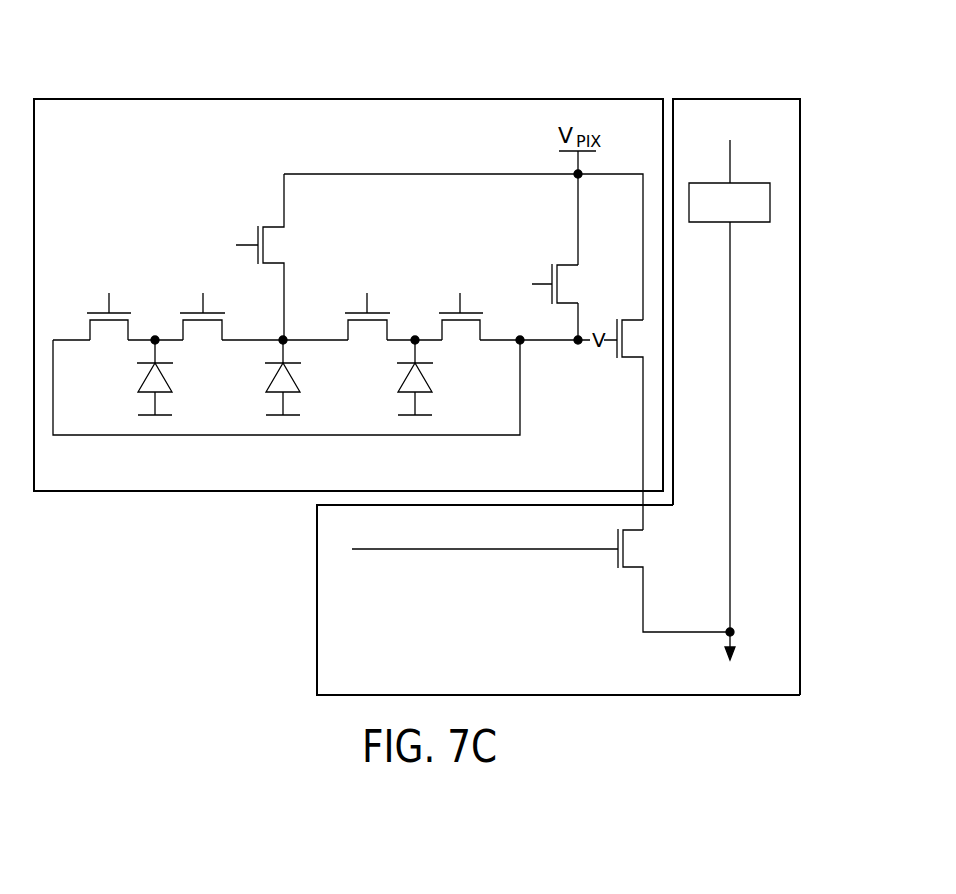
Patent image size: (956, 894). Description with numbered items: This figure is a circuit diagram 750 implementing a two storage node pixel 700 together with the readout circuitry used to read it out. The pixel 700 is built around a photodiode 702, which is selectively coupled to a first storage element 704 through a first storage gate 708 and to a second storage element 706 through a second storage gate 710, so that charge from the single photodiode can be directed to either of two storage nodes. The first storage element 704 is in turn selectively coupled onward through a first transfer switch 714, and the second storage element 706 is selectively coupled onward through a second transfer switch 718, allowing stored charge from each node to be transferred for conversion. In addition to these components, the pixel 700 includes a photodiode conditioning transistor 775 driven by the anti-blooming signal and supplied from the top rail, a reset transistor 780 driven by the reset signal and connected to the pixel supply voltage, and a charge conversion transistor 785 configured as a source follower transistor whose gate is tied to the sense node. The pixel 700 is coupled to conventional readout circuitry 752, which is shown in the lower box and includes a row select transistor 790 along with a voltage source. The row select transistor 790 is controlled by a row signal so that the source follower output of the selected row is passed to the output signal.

The pixel 700 is at (608, 69).
The circuit diagram 750 is at (772, 69).
The readout circuitry 752 is at (317, 550).
The photodiode 702 is at (276, 375).
The first storage element 704 is at (406, 375).
The second storage element 706 is at (148, 375).
The first storage gate 708 is at (388, 327).
The second storage gate 710 is at (183, 325).
The first transfer switch 714 is at (483, 328).
The second transfer switch 718 is at (90, 325).
The photodiode conditioning transistor 775 is at (280, 224).
The reset transistor 780 is at (572, 262).
The charge conversion transistor 785 is at (634, 318).
The row select transistor 790 is at (632, 568).